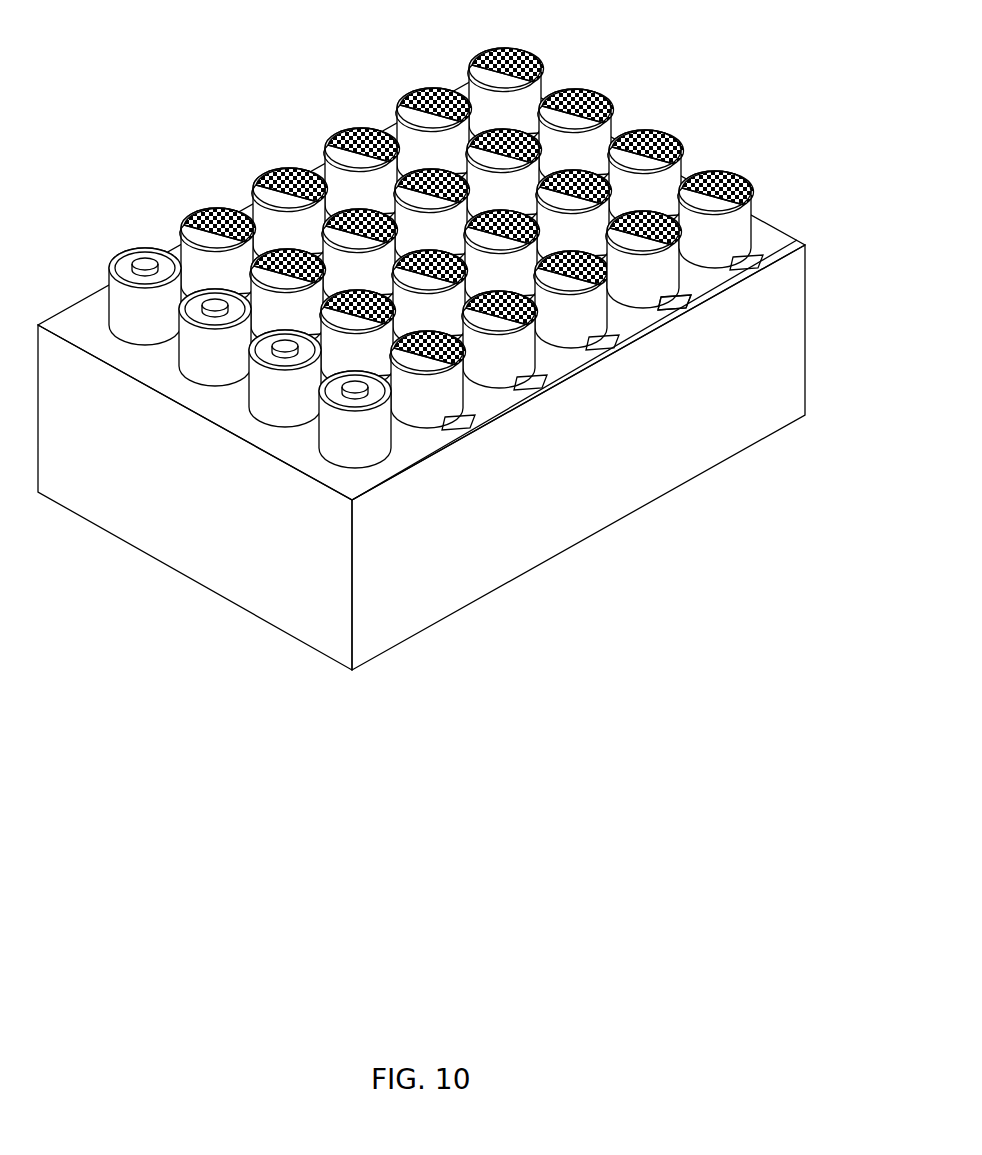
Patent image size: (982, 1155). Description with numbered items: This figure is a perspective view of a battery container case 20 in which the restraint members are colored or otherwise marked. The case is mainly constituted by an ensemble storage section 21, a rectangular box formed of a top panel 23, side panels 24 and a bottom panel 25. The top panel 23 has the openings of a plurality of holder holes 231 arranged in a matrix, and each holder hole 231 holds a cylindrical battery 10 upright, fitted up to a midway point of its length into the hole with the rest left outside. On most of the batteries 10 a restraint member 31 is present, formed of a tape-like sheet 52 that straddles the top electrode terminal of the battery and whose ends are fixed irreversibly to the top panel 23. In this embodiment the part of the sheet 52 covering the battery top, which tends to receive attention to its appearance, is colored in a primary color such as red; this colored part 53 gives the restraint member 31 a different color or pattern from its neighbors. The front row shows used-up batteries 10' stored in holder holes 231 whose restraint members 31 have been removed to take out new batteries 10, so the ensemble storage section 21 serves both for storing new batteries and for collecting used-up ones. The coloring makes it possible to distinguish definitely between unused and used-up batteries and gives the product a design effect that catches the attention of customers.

The cylindrical battery 10 is at (688, 281).
The used-up battery 10' is at (250, 368).
The battery container case 20 is at (465, 394).
The ensemble storage section 21 is at (265, 497).
The top panel 23 is at (622, 340).
The side panel 24 is at (195, 497).
The bottom panel 25 is at (424, 613).
The holder hole 231 is at (660, 296).
The restraint member 31 is at (714, 114).
The tape-like sheet 52 is at (706, 172).
The colored part 53 is at (212, 213).